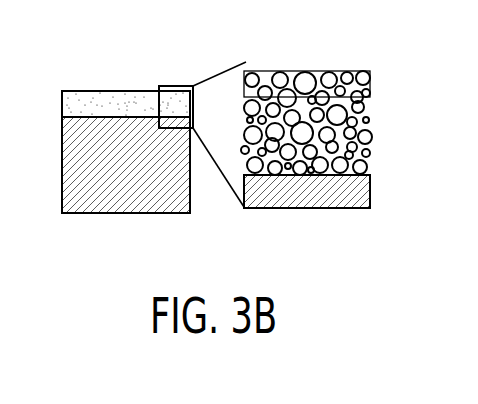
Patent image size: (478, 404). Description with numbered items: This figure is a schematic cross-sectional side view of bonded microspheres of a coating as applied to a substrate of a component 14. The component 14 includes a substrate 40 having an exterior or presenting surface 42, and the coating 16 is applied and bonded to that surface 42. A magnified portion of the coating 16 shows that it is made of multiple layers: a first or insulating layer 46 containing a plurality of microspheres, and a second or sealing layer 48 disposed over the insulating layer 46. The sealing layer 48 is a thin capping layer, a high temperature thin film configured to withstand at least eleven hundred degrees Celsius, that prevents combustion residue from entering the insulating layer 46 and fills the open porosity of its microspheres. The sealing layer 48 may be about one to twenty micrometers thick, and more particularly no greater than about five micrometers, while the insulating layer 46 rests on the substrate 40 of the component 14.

The component 14 is at (109, 236).
The coating 16 is at (81, 70).
The substrate 40 is at (77, 178).
The surface 42 is at (78, 118).
The insulating layer 46 is at (375, 98).
The sealing layer 48 is at (375, 71).